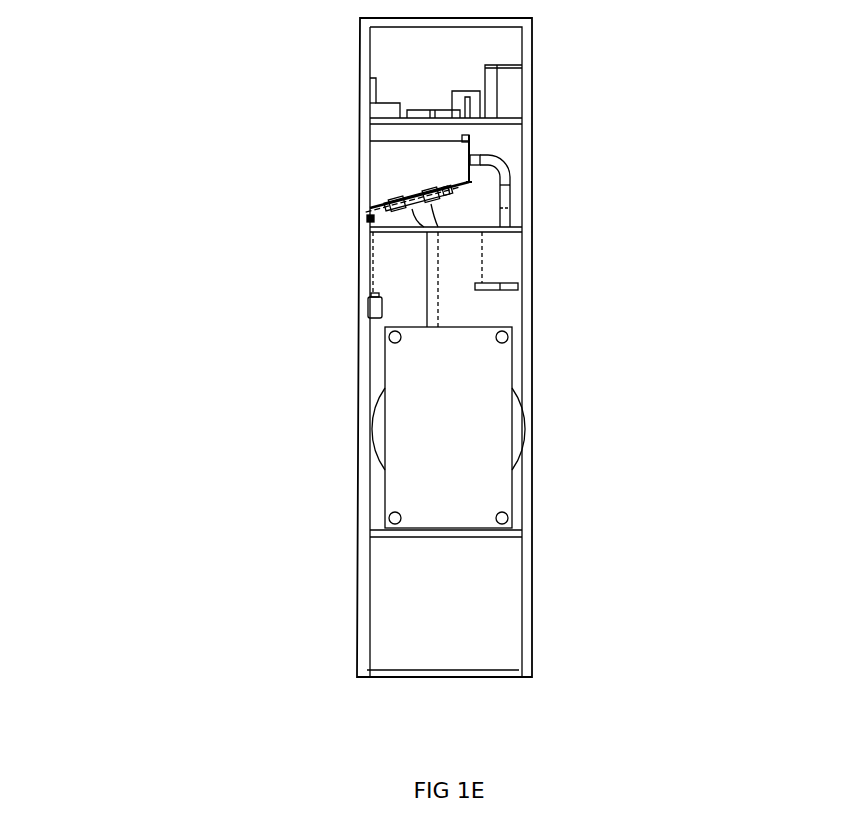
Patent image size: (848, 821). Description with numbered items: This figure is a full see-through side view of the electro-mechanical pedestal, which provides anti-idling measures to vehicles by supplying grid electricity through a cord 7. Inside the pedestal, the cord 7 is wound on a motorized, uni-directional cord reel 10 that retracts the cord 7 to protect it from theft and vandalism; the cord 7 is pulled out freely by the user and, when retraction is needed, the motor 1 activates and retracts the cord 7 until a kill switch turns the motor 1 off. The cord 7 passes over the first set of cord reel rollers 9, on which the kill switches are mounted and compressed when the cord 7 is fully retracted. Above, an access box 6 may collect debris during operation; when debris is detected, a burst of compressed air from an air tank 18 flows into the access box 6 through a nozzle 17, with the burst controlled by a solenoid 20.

The lead screw motor 1 is at (375, 304).
The access box 6 is at (392, 179).
The cord 7 is at (430, 305).
The first set of cord reel rollers 9 is at (366, 219).
The cord reel 10 is at (430, 472).
The nozzle 17 is at (505, 205).
The air tank 18 is at (500, 272).
The solenoid 20 is at (471, 140).